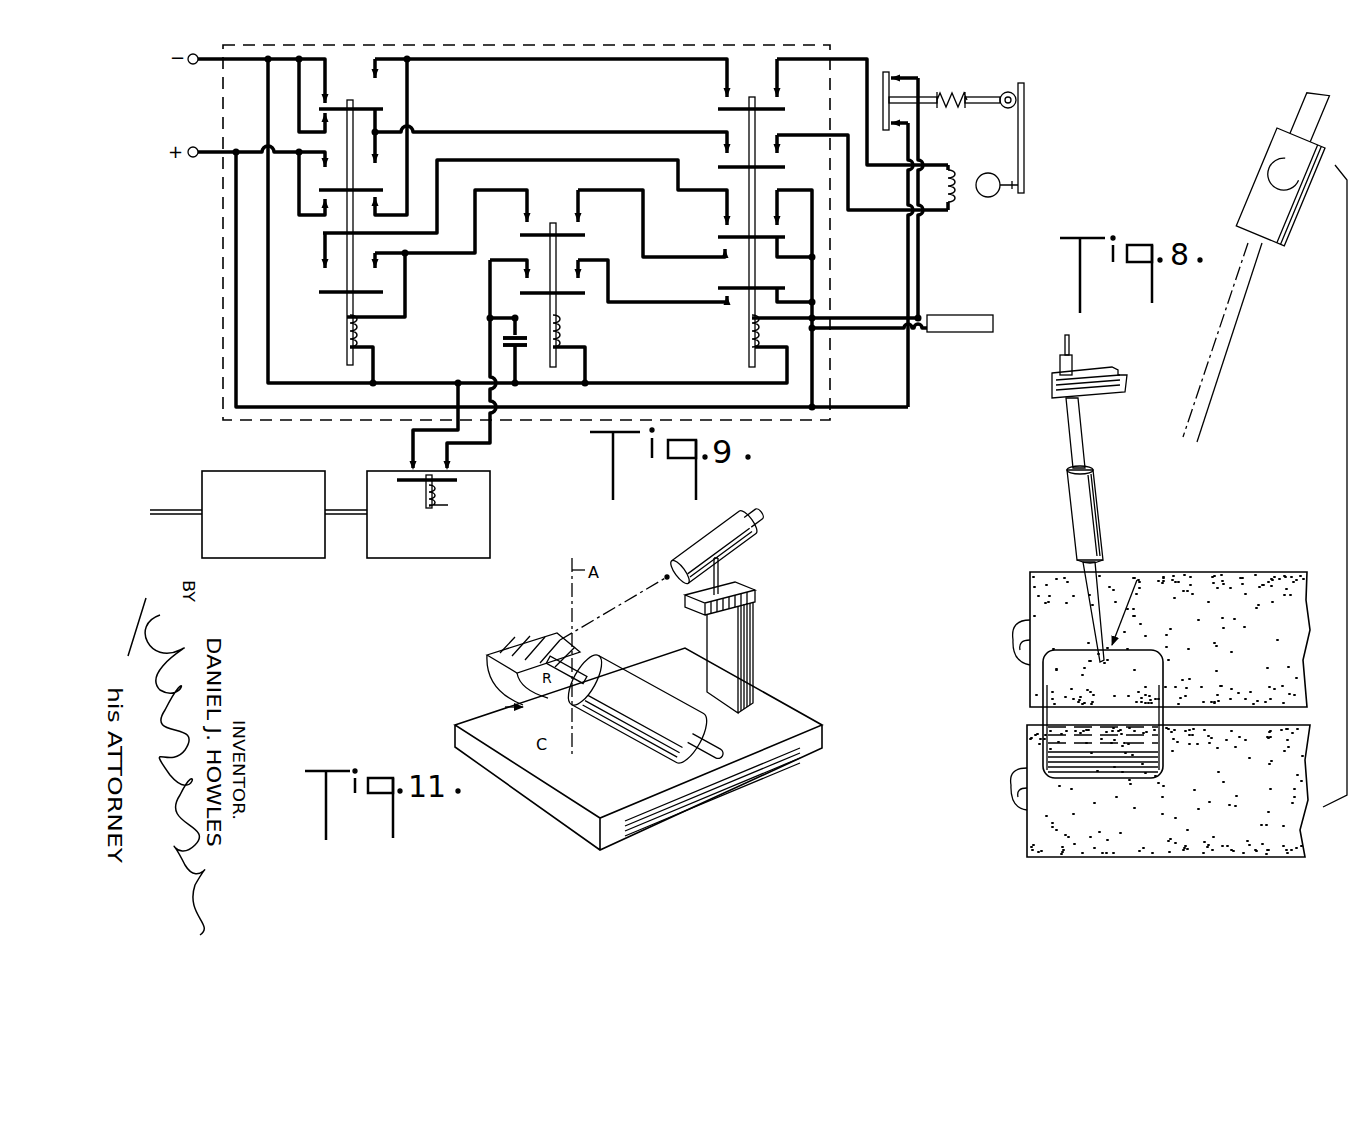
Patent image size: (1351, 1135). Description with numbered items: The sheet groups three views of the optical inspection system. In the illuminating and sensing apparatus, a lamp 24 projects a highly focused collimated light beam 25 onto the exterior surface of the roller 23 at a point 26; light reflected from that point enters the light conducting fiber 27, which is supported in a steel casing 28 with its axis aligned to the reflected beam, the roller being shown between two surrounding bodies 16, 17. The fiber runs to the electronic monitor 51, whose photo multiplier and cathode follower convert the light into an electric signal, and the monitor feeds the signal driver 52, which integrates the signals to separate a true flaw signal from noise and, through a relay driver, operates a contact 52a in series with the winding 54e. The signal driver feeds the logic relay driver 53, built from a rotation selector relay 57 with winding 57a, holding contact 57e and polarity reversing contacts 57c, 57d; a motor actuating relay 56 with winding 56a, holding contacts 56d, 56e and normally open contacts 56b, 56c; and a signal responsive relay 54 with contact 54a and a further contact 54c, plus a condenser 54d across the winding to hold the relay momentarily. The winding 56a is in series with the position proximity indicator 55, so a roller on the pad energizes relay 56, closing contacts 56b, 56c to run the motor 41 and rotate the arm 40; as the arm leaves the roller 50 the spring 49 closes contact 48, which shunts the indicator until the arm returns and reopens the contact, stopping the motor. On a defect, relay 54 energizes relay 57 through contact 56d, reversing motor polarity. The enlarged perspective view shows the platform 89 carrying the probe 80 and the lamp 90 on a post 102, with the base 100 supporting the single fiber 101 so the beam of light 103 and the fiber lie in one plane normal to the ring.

In FIG. 8, the lower skin panel 16 is at (1035, 835).
In FIG. 8, the upper skin panel 17 is at (1253, 575).
In FIG. 8, the roller 23 is at (1103, 714).
In FIG. 8, the lamp 24 is at (1252, 198).
In FIG. 8, the collimated light beam 25 is at (1210, 395).
In FIG. 8, the point 26 is at (1105, 663).
In FIG. 8, the light conducting fiber 27 is at (1069, 337).
In FIG. 8, the steel casing 28 is at (1095, 510).
In FIG. 9, the arm 40 is at (1026, 125).
In FIG. 9, the motor 41 is at (980, 205).
In FIG. 9, the contact 48 is at (893, 48).
In FIG. 9, the spring 49 is at (978, 108).
In FIG. 9, the roller 50 is at (1003, 92).
In FIG. 9, the electronic monitor 51 is at (218, 467).
In FIG. 9, the signal driver 52 is at (492, 508).
In FIG. 9, the contact 52a is at (460, 477).
In FIG. 9, the logic relay driver 53 is at (768, 424).
In FIG. 9, the signal responsive relay 54 is at (473, 297).
In FIG. 9, the rotation selector energizing contact 54a is at (552, 222).
In FIG. 9, the relay contact bar 54c is at (575, 297).
In FIG. 9, the capacitor 54d is at (503, 343).
In FIG. 9, the winding 54e is at (562, 336).
In FIG. 9, the position proximity indicator 55 is at (963, 332).
In FIG. 9, the motor actuating relay 56 is at (822, 271).
In FIG. 9, the winding 56a is at (745, 332).
In FIG. 9, the contact 56b is at (718, 110).
In FIG. 9, the contact 56c is at (802, 172).
In FIG. 9, the holding contact 56d is at (718, 238).
In FIG. 9, the holding contact 56e is at (718, 288).
In FIG. 9, the rotation selector relay 57 is at (316, 279).
In FIG. 9, the winding 57a is at (343, 339).
In FIG. 9, the contact 57c is at (340, 106).
In FIG. 9, the contact 57d is at (342, 197).
In FIG. 9, the holding contact 57e is at (332, 299).
In FIG. 11, the probe 80 is at (500, 692).
In FIG. 11, the platform 89 is at (787, 722).
In FIG. 11, the lamp 90 is at (716, 520).
In FIG. 11, the base 100 is at (633, 688).
In FIG. 11, the single fiber 101 is at (577, 672).
In FIG. 11, the post 102 is at (752, 635).
In FIG. 11, the beam of light 103 is at (640, 592).